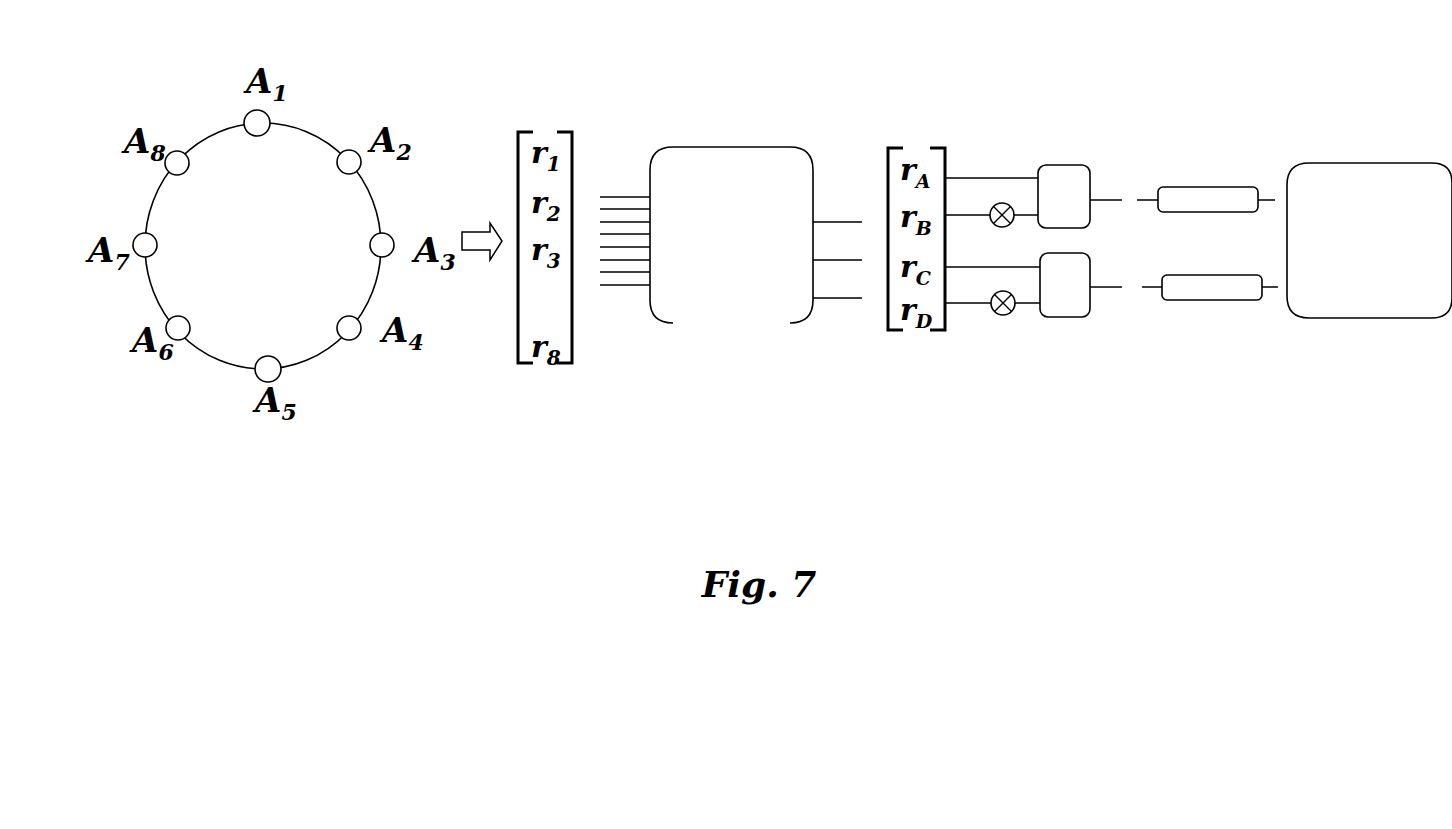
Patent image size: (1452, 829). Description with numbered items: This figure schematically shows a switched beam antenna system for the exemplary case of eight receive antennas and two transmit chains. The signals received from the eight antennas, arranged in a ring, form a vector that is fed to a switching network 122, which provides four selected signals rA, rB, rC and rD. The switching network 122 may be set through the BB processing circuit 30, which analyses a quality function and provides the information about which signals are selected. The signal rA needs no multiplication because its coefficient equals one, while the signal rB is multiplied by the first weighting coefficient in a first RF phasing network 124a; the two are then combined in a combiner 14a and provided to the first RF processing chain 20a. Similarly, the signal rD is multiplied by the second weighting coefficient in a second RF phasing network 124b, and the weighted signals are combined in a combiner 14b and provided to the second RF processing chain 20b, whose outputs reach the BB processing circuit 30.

The switching network 122 is at (713, 147).
The first RF phasing network 124a is at (996, 206).
The second RF phasing network 124b is at (1007, 317).
The combiner 14a is at (1060, 165).
The combiner 14b is at (1068, 317).
The first RF processing chain 20a is at (1210, 187).
The second RF processing chain 20b is at (1215, 300).
The BB processing circuit 30 is at (1363, 163).